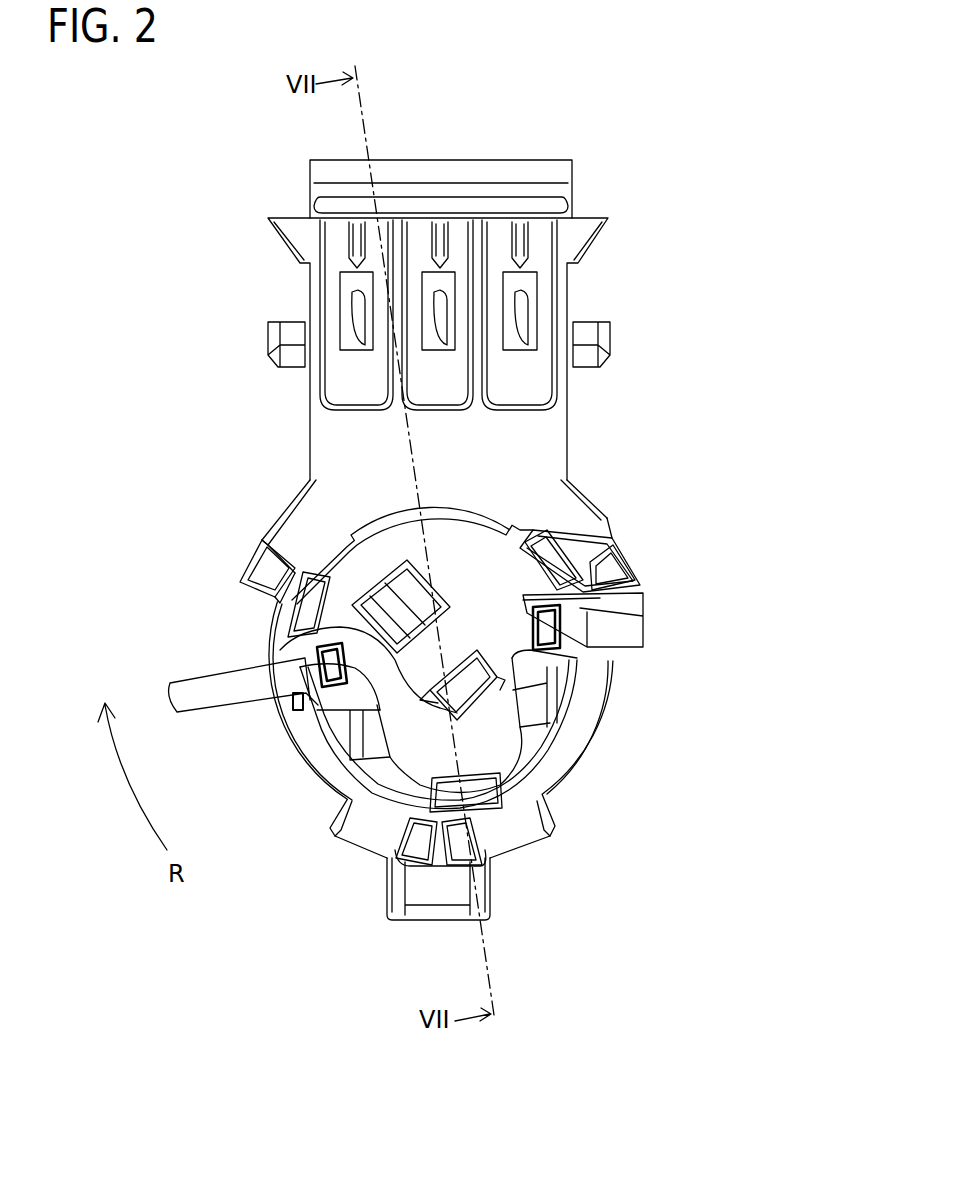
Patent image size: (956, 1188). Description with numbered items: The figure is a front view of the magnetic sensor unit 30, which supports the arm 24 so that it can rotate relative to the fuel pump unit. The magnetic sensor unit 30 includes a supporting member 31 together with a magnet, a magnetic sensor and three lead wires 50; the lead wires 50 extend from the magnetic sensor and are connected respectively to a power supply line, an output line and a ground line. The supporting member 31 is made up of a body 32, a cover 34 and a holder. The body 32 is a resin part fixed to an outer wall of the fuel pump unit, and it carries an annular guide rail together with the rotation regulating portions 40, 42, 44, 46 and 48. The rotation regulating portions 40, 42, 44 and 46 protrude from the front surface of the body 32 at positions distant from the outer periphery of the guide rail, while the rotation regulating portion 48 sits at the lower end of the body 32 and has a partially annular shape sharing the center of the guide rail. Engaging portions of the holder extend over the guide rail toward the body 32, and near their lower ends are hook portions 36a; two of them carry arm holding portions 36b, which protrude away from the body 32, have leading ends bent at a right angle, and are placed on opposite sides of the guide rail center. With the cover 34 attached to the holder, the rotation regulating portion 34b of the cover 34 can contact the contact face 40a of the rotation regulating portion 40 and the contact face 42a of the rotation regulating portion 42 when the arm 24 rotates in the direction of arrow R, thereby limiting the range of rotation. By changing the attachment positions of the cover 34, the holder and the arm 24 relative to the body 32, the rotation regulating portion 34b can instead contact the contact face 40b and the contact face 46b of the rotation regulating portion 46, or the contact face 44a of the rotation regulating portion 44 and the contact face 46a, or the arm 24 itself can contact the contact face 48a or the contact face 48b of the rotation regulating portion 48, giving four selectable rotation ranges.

The magnetic sensor unit 30 is at (512, 140).
The supporting member 31 is at (586, 404).
The body 32 is at (548, 433).
The lead wires 50 is at (355, 280).
The cover 34 is at (520, 530).
The rotation regulating portion of the cover 34b is at (622, 650).
The hook portion 36a is at (300, 602).
The arm holding portion 36b is at (332, 667).
The rotation regulating portion 40 is at (620, 572).
The contact face 40a is at (625, 610).
The contact face 40b is at (612, 526).
The rotation regulating portion 46 is at (262, 567).
The contact face 46a is at (265, 600).
The contact face 46b is at (283, 538).
The rotation regulating portion 48 is at (520, 792).
The contact face 48a is at (555, 826).
The contact face 48b is at (318, 824).
The rotation regulating portion 42 is at (488, 860).
The contact face 42a is at (520, 850).
The rotation regulating portion 44 is at (397, 848).
The contact face 44a is at (348, 850).
The arm 24 is at (216, 700).